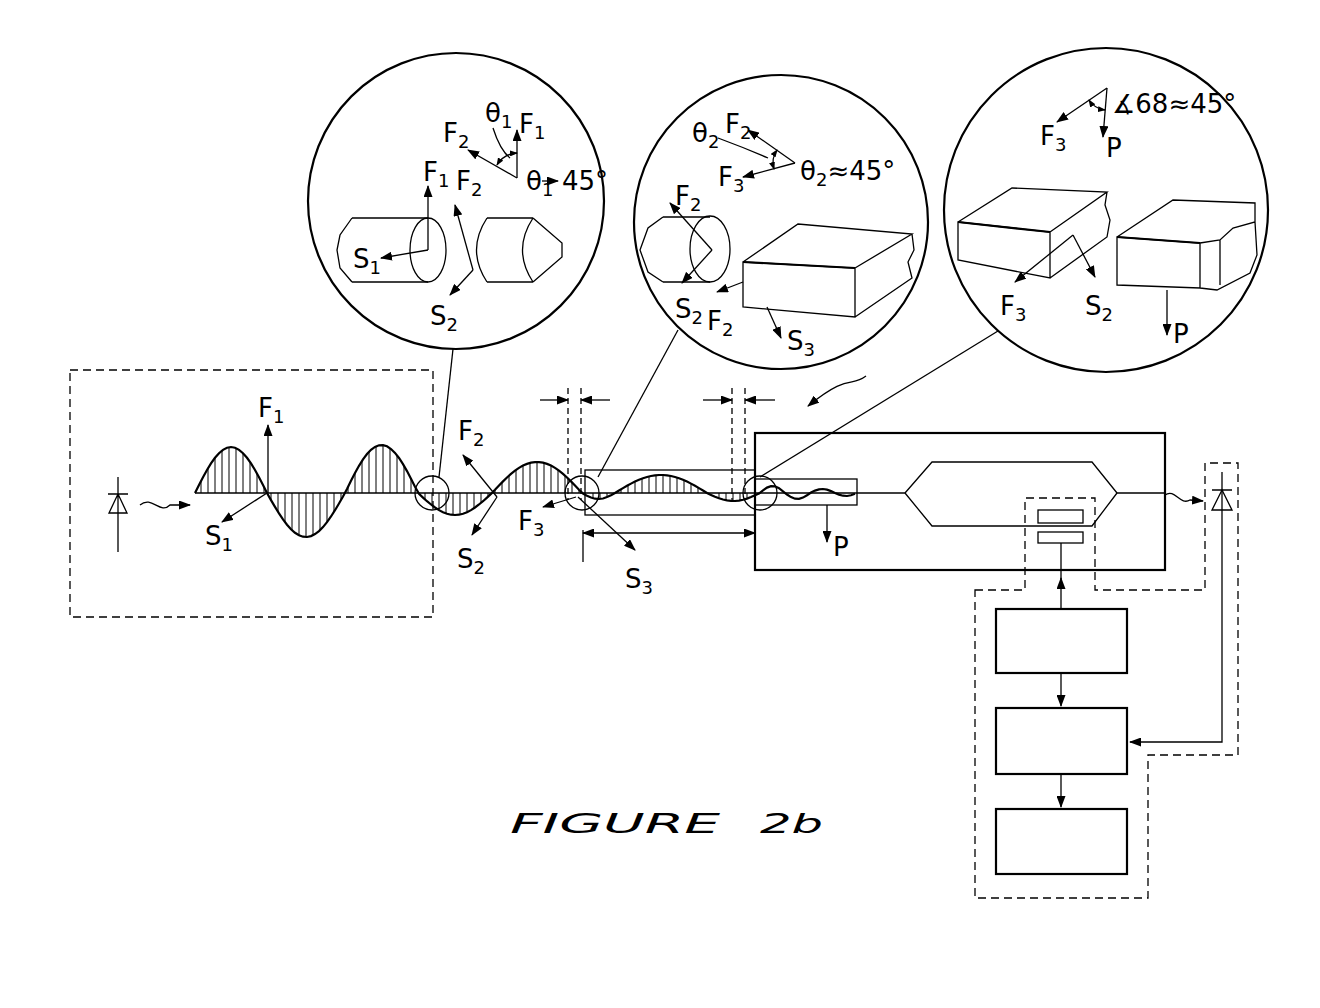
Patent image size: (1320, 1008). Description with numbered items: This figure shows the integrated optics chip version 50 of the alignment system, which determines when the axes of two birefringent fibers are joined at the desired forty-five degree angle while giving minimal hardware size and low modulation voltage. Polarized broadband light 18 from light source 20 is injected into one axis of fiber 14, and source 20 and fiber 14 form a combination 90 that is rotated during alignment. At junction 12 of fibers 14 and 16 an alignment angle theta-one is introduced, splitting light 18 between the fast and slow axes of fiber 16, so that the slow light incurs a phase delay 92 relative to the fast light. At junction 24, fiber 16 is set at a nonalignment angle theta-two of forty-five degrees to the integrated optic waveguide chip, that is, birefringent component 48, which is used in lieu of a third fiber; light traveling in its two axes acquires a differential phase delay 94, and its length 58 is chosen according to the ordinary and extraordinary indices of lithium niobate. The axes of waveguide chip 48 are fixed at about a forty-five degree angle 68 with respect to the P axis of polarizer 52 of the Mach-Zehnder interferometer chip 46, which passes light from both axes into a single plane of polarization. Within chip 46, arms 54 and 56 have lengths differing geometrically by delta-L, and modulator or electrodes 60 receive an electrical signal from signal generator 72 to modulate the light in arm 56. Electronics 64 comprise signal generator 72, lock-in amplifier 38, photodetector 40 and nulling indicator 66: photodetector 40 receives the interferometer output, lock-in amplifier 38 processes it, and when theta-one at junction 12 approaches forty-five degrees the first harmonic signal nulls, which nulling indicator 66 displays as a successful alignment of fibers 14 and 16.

The combination of light source and fiber 90 is at (157, 370).
The light source 20 is at (114, 515).
The light 18 is at (167, 508).
The fiber 14 is at (377, 218).
The junction 12 is at (420, 507).
The fiber 16 is at (547, 250).
The junction 24 is at (577, 505).
The phase delay 92 is at (548, 392).
The differential phase delay 94 is at (718, 392).
The birefringent component 48 is at (650, 470).
The length 58 is at (688, 536).
The integrated optics chip version 50 is at (854, 381).
The Mach-Zehnder interferometer chip 46 is at (945, 433).
The polarizer 52 is at (805, 479).
The angle 68 is at (760, 510).
The arm 54 is at (1045, 462).
The arm 56 is at (962, 527).
The modulator 60 is at (1055, 510).
The electronics 64 is at (973, 625).
The signal generator 72 is at (996, 647).
The lock-in amplifier 38 is at (996, 748).
The nulling indicator 66 is at (996, 848).
The photodetector 40 is at (1234, 500).